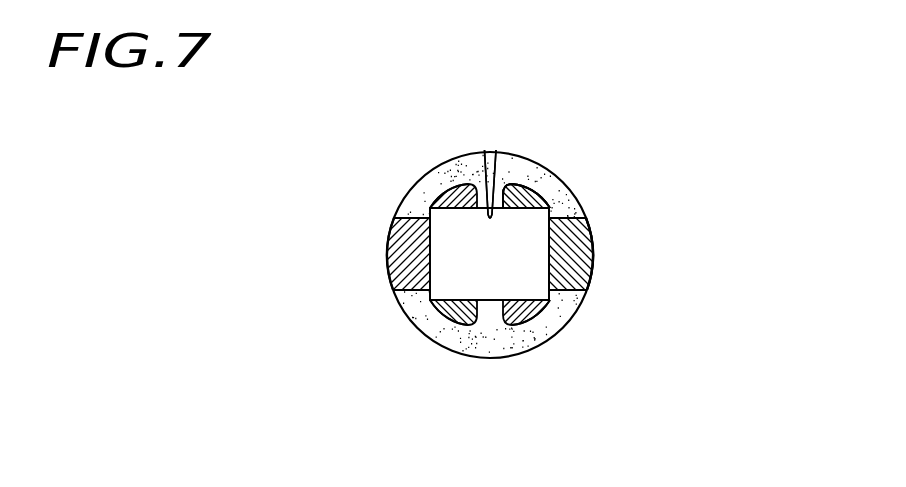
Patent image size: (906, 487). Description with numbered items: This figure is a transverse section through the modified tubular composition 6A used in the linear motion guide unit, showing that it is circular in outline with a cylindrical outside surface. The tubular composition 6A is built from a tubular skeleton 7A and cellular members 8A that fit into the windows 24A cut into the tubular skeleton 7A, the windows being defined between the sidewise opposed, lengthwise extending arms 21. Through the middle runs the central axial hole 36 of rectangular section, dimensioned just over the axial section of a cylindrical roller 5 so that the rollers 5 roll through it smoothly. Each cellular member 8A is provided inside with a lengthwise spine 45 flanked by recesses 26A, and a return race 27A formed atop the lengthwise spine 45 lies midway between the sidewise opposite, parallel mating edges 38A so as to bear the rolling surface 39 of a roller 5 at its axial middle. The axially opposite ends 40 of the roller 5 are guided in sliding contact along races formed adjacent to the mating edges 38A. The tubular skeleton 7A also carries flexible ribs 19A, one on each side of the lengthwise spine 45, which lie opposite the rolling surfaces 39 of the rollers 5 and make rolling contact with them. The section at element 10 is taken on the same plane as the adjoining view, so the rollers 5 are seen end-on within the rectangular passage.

The roller 5 is at (460, 259).
The tubular composition 6A is at (596, 200).
The tubular skeleton 7A is at (593, 266).
The cellular member 8A is at (505, 183).
The inner sleeve 10 is at (525, 273).
The central axial hole 36 is at (525, 273).
The flexible rib 19A is at (468, 190).
The arm 21 is at (400, 252).
The window 24A is at (558, 208).
The recess 26A is at (528, 187).
The return race 27A is at (485, 153).
The mating edge 38A is at (388, 236).
The rolling surface 39 is at (440, 176).
The axially opposite end 40 is at (405, 290).
The lengthwise spine 45 is at (496, 190).